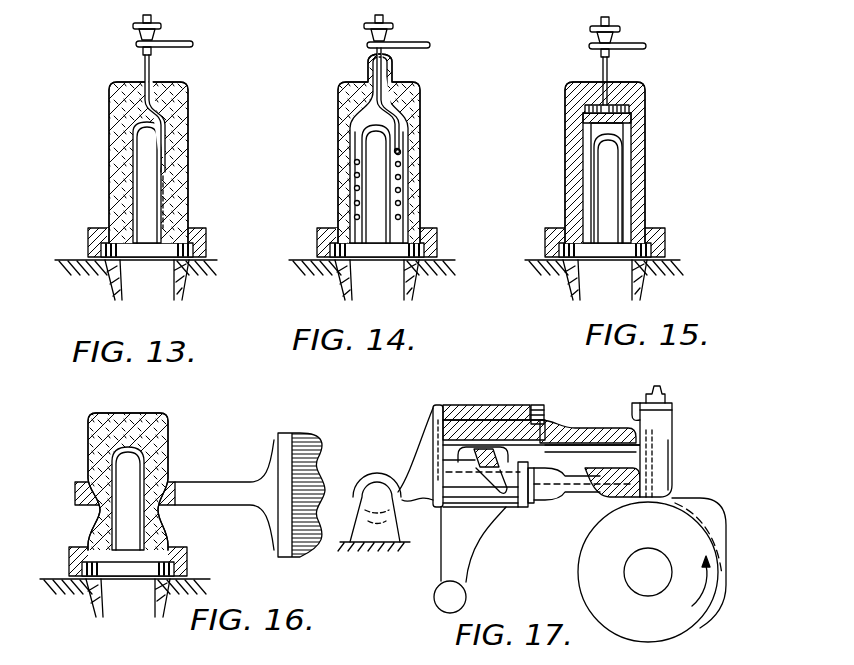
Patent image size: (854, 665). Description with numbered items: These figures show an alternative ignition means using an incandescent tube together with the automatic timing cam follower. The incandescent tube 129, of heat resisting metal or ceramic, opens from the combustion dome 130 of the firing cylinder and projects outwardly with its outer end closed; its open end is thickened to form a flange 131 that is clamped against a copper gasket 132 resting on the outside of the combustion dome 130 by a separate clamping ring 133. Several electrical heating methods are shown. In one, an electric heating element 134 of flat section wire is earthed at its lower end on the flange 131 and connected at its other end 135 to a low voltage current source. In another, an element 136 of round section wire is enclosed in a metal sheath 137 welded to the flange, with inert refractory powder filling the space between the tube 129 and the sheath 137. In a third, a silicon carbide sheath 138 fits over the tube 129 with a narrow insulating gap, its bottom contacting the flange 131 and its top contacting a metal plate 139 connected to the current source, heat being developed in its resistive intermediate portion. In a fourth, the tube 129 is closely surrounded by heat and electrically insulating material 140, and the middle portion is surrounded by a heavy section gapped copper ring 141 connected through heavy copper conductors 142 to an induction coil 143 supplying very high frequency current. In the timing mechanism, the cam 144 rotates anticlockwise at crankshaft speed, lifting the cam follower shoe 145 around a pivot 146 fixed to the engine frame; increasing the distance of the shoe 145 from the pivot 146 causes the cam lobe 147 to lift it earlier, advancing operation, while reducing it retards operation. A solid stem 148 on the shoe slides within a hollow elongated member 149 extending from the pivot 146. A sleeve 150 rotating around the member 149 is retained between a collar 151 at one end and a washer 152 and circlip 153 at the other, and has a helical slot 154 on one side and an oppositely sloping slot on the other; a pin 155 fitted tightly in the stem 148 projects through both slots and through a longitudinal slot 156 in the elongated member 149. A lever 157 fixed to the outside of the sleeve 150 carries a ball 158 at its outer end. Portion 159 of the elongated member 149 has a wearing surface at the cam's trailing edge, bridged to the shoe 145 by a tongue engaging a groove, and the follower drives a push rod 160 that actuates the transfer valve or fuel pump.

In FIG. 13, the incandescent tube 129 is at (145, 152).
In FIG. 14, the incandescent tube 129 is at (385, 195).
In FIG. 15, the incandescent tube 129 is at (610, 158).
In FIG. 16, the incandescent tube 129 is at (120, 459).
In FIG. 13, the combustion dome 130 is at (157, 309).
In FIG. 14, the combustion dome 130 is at (390, 308).
In FIG. 15, the combustion dome 130 is at (620, 293).
In FIG. 16, the combustion dome 130 is at (143, 626).
In FIG. 13, the flange 131 is at (122, 227).
In FIG. 14, the flange 131 is at (432, 247).
In FIG. 15, the flange 131 is at (648, 248).
In FIG. 16, the flange 131 is at (172, 568).
In FIG. 13, the copper gasket 132 is at (109, 275).
In FIG. 14, the copper gasket 132 is at (343, 266).
In FIG. 15, the copper gasket 132 is at (566, 272).
In FIG. 16, the copper gasket 132 is at (96, 592).
In FIG. 13, the clamping ring 133 is at (206, 238).
In FIG. 14, the clamping ring 133 is at (318, 238).
In FIG. 15, the clamping ring 133 is at (663, 236).
In FIG. 16, the clamping ring 133 is at (188, 556).
In FIG. 13, the electric heating element 134 is at (185, 178).
In FIG. 13, the other end of heating element 135 is at (193, 47).
In FIG. 14, the other end of heating element 135 is at (430, 48).
In FIG. 15, the other end of heating element 135 is at (648, 48).
In FIG. 14, the element 136 is at (402, 163).
In FIG. 14, the metal sheath 137 is at (418, 141).
In FIG. 15, the silicon carbide sheath 138 is at (633, 138).
In FIG. 15, the metal plate 139 is at (625, 110).
In FIG. 16, the heat and electrically insulating material 140 is at (150, 441).
In FIG. 16, the gapped copper ring 141 is at (158, 482).
In FIG. 16, the copper conductors 142 is at (240, 492).
In FIG. 16, the induction coil 143 is at (307, 452).
In FIG. 17, the cam 144 is at (598, 582).
In FIG. 17, the cam follower shoe 145 is at (660, 465).
In FIG. 17, the pivot 146 is at (377, 481).
In FIG. 17, the cam lobe 147 is at (707, 508).
In FIG. 17, the solid stem 148 is at (607, 447).
In FIG. 17, the hollow elongated member 149 is at (575, 433).
In FIG. 17, the sleeve 150 is at (485, 450).
In FIG. 17, the collar 151 is at (432, 410).
In FIG. 17, the washer 152 is at (521, 405).
In FIG. 17, the circlip 153 is at (526, 414).
In FIG. 17, the helical slot 154 is at (505, 490).
In FIG. 17, the pin 155 is at (467, 450).
In FIG. 17, the longitudinal slot 156 is at (465, 450).
In FIG. 17, the lever 157 is at (448, 558).
In FIG. 17, the ball 158 is at (440, 593).
In FIG. 17, the portion of elongated member 159 is at (615, 488).
In FIG. 17, the push rod 160 is at (662, 393).